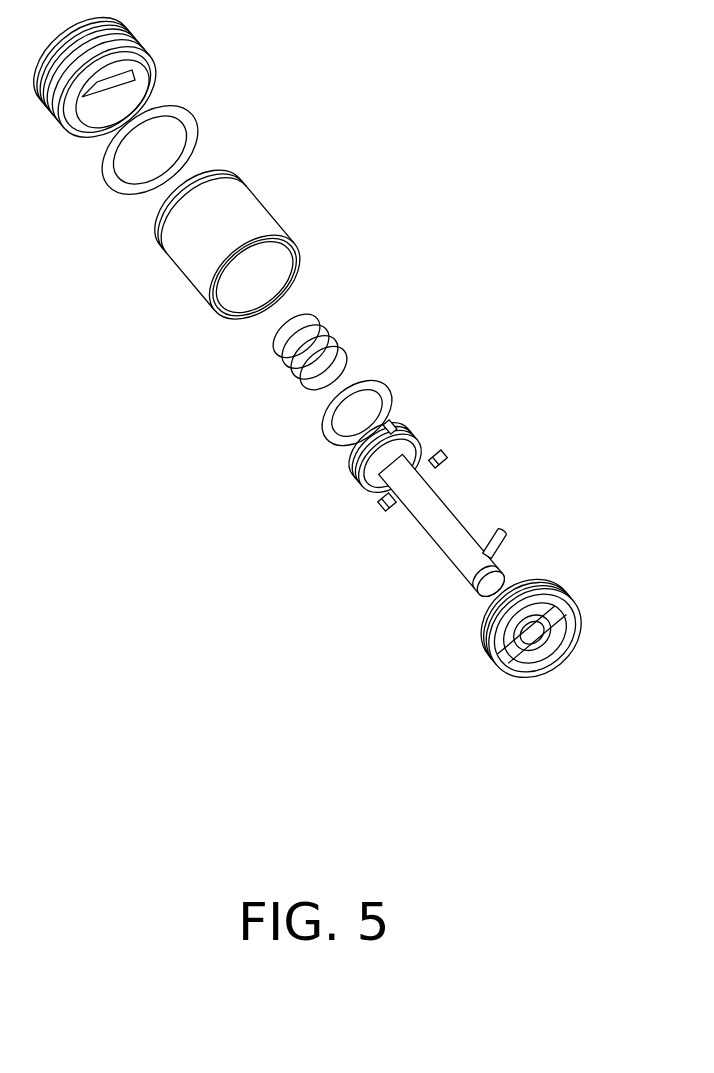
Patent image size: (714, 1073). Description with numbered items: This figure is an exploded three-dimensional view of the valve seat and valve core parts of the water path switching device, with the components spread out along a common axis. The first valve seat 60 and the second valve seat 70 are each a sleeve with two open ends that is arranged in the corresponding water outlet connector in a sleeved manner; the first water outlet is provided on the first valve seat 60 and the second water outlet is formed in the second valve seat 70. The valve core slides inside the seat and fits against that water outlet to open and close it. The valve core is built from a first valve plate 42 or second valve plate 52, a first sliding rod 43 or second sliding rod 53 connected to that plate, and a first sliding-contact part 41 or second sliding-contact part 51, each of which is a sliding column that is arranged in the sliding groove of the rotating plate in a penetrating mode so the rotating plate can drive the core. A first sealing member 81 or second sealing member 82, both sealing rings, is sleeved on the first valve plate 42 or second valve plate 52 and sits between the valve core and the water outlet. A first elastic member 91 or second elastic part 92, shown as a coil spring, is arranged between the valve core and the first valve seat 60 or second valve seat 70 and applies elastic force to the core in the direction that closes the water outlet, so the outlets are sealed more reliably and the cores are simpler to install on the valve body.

The first valve seat 60 is at (326, 348).
The second valve seat 70 is at (560, 592).
The first elastic member 91 is at (217, 385).
The second elastic part 92 is at (277, 365).
The first sealing member 81 is at (246, 478).
The second sealing member 82 is at (323, 447).
The first valve plate 42 is at (306, 535).
The second valve plate 52 is at (365, 473).
The first sliding rod 43 is at (334, 589).
The second sliding rod 53 is at (433, 533).
The first sliding-contact part 41 is at (340, 659).
The second sliding-contact part 51 is at (485, 556).